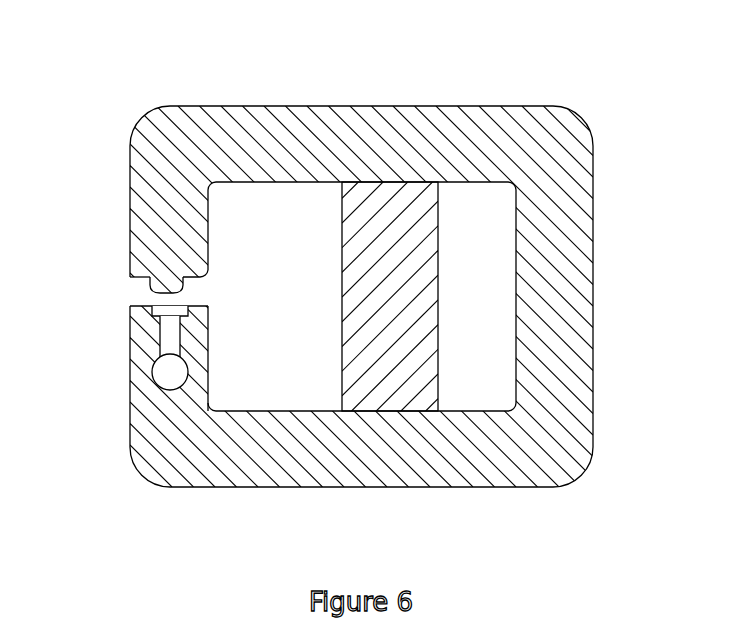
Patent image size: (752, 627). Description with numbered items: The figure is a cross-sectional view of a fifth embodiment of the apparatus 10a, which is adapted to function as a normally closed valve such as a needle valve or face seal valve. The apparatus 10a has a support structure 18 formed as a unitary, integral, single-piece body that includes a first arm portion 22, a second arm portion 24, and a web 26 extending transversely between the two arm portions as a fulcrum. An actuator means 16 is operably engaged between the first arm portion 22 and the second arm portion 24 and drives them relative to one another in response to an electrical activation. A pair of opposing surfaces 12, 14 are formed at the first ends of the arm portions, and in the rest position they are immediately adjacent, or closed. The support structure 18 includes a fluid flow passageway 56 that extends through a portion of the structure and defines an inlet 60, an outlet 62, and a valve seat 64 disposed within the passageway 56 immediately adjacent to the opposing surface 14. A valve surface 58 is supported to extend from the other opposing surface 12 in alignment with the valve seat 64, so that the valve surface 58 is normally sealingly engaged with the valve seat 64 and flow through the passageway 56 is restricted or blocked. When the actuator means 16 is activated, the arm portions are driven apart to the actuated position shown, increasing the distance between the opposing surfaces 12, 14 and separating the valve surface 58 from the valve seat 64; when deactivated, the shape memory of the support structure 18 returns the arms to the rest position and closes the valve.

The apparatus 10a is at (360, 281).
The support structure 18 is at (360, 291).
The first arm portion 22 is at (340, 133).
The second arm portion 24 is at (335, 463).
The web 26 is at (570, 290).
The actuator means 16 is at (375, 272).
The opposing surface 12 is at (149, 224).
The opposing surface 14 is at (173, 369).
The valve surface 58 is at (205, 283).
The outlet 62 is at (160, 302).
The valve seat 64 is at (182, 300).
The fluid flow passageway 56 is at (192, 337).
The inlet 60 is at (160, 377).